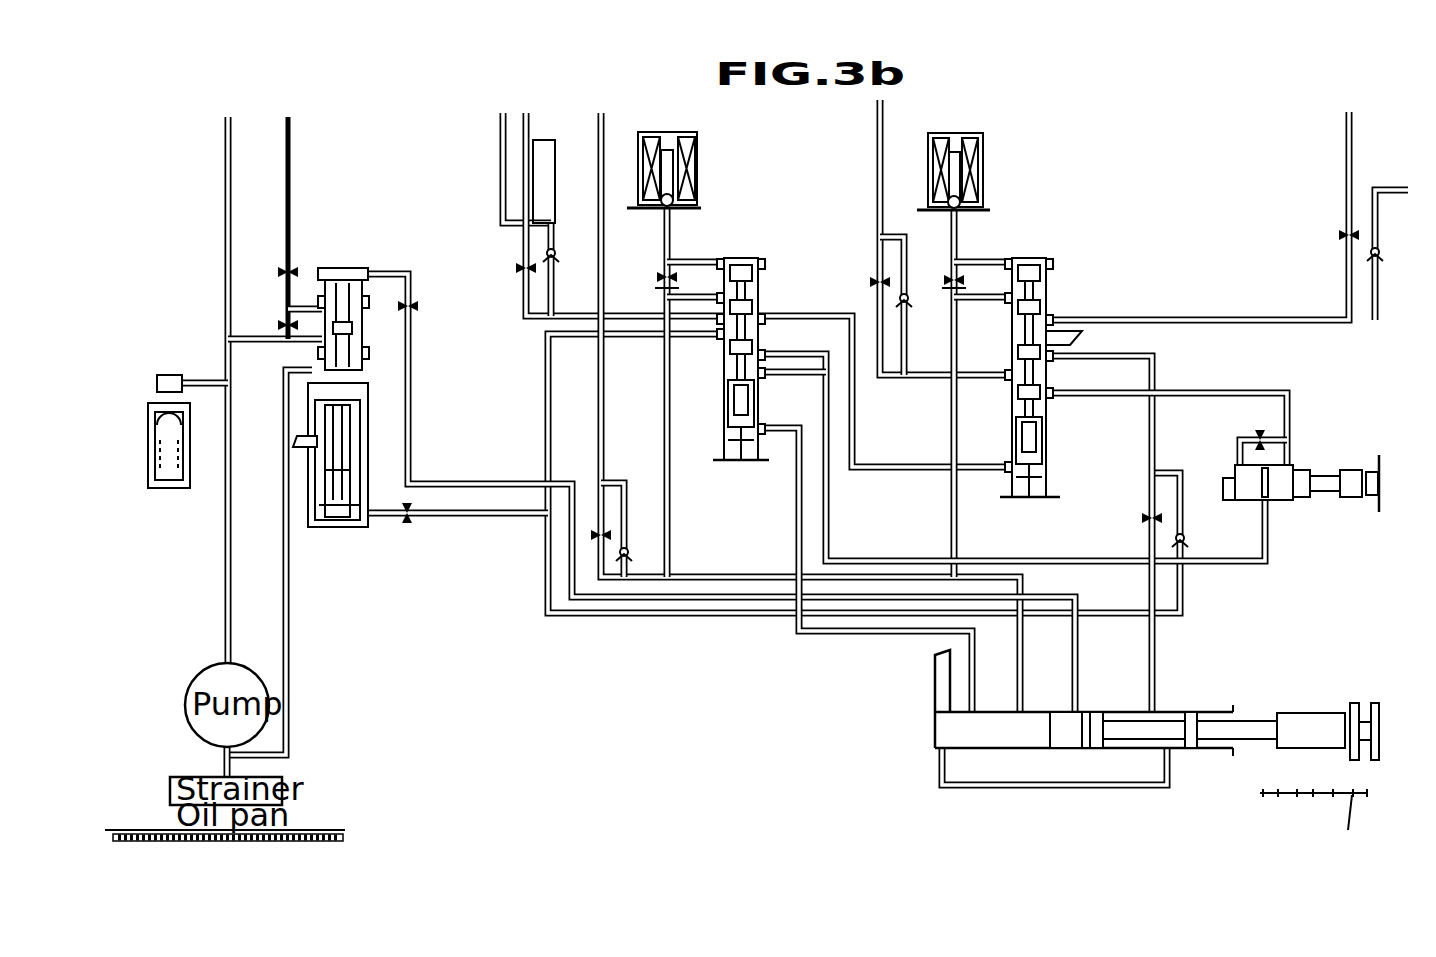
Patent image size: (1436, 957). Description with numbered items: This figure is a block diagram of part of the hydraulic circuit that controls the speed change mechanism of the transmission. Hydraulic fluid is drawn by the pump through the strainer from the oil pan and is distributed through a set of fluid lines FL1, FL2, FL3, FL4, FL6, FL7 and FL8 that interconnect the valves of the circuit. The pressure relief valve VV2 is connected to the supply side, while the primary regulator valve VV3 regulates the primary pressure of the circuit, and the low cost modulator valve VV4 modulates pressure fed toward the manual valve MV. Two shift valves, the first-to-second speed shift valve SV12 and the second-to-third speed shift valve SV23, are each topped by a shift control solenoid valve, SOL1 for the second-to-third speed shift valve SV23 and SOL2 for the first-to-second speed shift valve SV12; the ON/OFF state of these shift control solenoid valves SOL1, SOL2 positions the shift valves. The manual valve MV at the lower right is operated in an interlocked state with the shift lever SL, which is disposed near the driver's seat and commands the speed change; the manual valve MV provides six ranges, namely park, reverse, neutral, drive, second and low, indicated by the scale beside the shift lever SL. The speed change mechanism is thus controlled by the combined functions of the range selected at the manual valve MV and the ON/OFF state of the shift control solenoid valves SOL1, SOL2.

The fluid line 1 FL1 is at (262, 371).
The fluid line 2 FL2 is at (308, 209).
The fluid line 3 FL3 is at (500, 151).
The fluid line 4 FL4 is at (805, 396).
The fluid line 6 FL6 is at (1211, 197).
The fluid line 7 FL7 is at (1396, 235).
The fluid line 8 FL8 is at (765, 273).
The shift control solenoid valve SOL1 is at (700, 162).
The shift control solenoid valve SOL2 is at (986, 158).
The pressure relief valve VV2 is at (165, 490).
The primary regulator valve VV3 is at (351, 268).
The low cost modulator valve VV4 is at (1306, 465).
The 2-3 speed shift valve SV23 is at (750, 462).
The 1-2 speed shift valve SV12 is at (1050, 466).
The manual valve MV is at (1306, 712).
The shift lever SL is at (1313, 831).